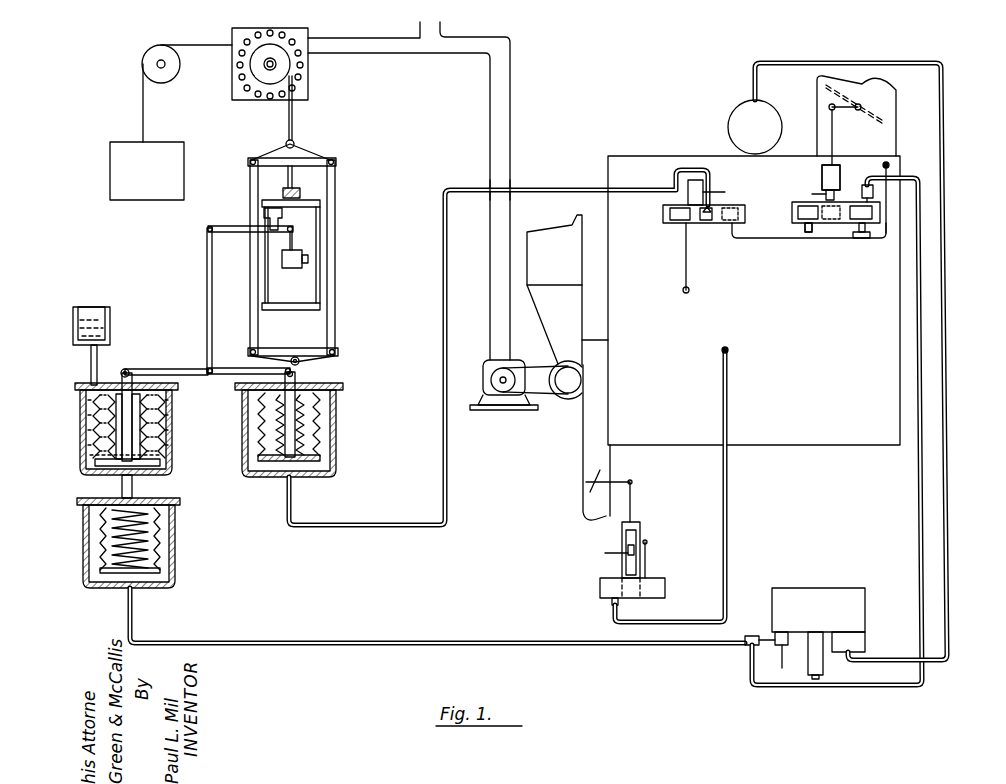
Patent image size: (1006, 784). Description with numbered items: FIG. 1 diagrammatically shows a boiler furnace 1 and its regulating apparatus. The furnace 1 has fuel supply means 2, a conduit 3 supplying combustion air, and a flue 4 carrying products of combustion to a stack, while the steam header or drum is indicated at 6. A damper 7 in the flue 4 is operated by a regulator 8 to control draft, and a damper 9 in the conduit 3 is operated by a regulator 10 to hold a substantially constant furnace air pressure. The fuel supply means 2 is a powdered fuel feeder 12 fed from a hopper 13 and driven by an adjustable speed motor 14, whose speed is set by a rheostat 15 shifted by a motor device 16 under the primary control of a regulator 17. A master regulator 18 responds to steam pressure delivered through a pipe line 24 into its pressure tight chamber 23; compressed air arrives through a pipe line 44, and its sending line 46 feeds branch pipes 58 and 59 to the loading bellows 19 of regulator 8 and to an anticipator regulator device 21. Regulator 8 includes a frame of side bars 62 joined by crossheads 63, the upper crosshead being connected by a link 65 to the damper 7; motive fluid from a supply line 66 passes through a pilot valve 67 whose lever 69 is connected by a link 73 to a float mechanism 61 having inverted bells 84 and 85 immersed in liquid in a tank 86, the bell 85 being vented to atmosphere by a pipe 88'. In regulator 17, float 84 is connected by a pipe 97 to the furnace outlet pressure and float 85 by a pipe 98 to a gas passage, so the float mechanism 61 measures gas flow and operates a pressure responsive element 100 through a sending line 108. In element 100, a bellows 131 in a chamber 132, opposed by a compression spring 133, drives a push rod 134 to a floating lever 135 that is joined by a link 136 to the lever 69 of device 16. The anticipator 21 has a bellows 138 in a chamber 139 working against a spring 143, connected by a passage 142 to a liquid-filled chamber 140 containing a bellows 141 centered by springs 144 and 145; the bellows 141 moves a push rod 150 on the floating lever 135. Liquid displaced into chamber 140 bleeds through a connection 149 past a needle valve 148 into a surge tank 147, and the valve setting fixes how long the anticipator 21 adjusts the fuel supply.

The boiler furnace 1 is at (754, 300).
The fuel supply means 2 is at (565, 341).
The conduit 3 is at (583, 463).
The flue 4 is at (898, 112).
The steam header 6 is at (728, 127).
The damper 7 is at (825, 100).
The regulator 8 is at (819, 178).
The damper 9 is at (588, 487).
The regulator 10 is at (640, 563).
The powdered fuel feeder 12 is at (575, 400).
The hopper 13 is at (554, 290).
The adjustable speed motor 14 is at (483, 385).
The rheostat 15 is at (308, 82).
The motor device 16 is at (313, 238).
The regulator 17 is at (690, 201).
The master regulator 18 is at (818, 598).
The loading bellows 19 is at (862, 186).
The anticipator regulator device 21 is at (146, 440).
The pressure tight chamber 23 is at (865, 642).
The pipe line 24 is at (950, 605).
The pipe line 44 is at (806, 660).
The sending line 46 is at (764, 650).
The branch pipe 58 is at (785, 688).
The branch pipe 59 is at (640, 646).
The float mechanism 61 is at (788, 220).
The side bars 62 is at (252, 187).
The crossheads 63 is at (318, 150).
The link 65 is at (832, 137).
The supply line 66 is at (823, 192).
The pilot valve 67 is at (292, 268).
The lever 69 is at (232, 227).
The link 73 is at (862, 238).
The inverted float 84 is at (745, 212).
The inverted float 85 is at (675, 222).
The tank 86 is at (884, 240).
The pipe 88' is at (691, 484).
The pipe 97 is at (801, 245).
The pipe 98 is at (688, 263).
The pressure responsive element 100 is at (370, 444).
The sending line 108 is at (448, 490).
The bellows 131 is at (310, 420).
The pressure-tight chamber 132 is at (322, 410).
The compression spring 133 is at (318, 450).
The push rod 134 is at (295, 374).
The floating lever 135 is at (190, 368).
The link 136 is at (207, 318).
The bellows 138 is at (150, 540).
The pressure-tight chamber 139 is at (175, 565).
The pressure-tight chamber 140 is at (165, 413).
The bellows 141 is at (152, 405).
The passage 142 is at (122, 484).
The compression spring 143 is at (165, 525).
The compression spring 144 is at (150, 440).
The compression spring 145 is at (135, 465).
The surge tank 147 is at (108, 318).
The needle valve 148 is at (90, 360).
The connection 149 is at (108, 368).
The push rod 150 is at (160, 405).